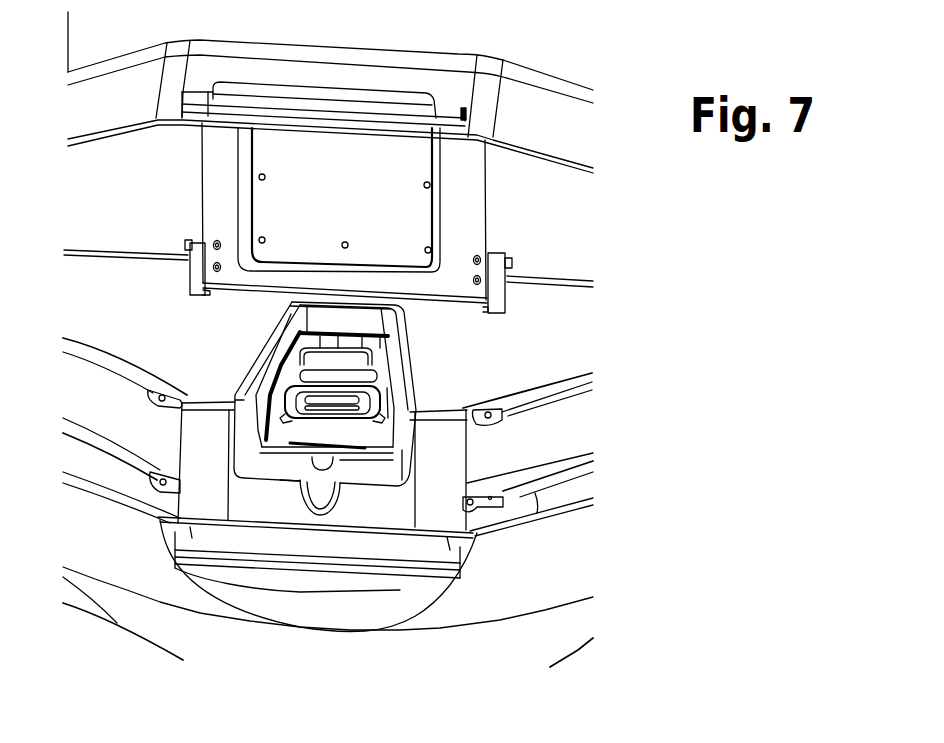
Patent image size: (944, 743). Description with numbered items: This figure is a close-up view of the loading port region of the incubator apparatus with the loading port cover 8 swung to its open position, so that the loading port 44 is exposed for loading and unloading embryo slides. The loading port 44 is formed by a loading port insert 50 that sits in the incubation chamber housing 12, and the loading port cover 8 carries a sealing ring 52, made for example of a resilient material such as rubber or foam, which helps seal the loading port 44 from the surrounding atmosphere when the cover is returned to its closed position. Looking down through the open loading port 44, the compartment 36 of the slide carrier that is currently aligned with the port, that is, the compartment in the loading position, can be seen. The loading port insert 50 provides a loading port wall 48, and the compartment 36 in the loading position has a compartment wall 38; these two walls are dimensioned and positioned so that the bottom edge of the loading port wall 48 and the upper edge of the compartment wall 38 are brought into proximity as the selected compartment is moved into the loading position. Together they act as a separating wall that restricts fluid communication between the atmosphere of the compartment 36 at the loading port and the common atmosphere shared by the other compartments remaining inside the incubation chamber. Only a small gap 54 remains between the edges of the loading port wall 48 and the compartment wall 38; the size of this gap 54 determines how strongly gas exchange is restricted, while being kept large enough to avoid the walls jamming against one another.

The loading port cover 8 is at (522, 100).
The incubation chamber housing 12 is at (550, 435).
The compartment 36 is at (288, 437).
The compartment wall 38 is at (277, 393).
The loading port 44 is at (400, 347).
The loading port wall 48 is at (297, 360).
The loading port insert 50 is at (367, 517).
The sealing ring 52 is at (440, 212).
The gap 54 is at (320, 331).